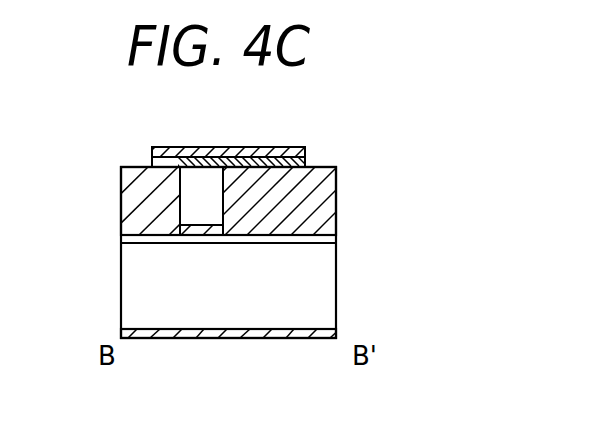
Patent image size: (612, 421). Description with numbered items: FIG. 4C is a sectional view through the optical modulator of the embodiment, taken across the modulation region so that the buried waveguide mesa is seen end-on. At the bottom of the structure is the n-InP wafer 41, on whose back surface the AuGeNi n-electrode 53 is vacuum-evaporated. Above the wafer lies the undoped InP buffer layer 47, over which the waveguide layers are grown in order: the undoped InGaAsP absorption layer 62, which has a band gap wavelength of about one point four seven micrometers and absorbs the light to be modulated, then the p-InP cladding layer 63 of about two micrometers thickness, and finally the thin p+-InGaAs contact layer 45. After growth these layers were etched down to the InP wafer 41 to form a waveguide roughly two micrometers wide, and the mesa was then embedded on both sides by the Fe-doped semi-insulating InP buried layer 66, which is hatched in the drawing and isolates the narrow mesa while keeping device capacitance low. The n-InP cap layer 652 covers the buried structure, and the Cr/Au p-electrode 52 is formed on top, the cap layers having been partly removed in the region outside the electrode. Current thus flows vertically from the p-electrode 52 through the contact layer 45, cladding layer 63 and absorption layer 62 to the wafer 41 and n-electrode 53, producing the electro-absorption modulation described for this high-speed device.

The n-InP wafer 41 is at (322, 295).
The p+-InGaAs contact layer 45 is at (208, 156).
The undoped InP buffer layer 47 is at (330, 240).
The Cr/Au p-electrode 52 is at (287, 146).
The AuGeNi n-electrode 53 is at (252, 339).
The undoped InGaAsP absorption layer 62 is at (195, 237).
The p-InP cladding layer 63 is at (187, 201).
The Fe-doped semi-insulating InP buried layer 66 is at (322, 199).
The n-InP cap layer 652 is at (305, 160).